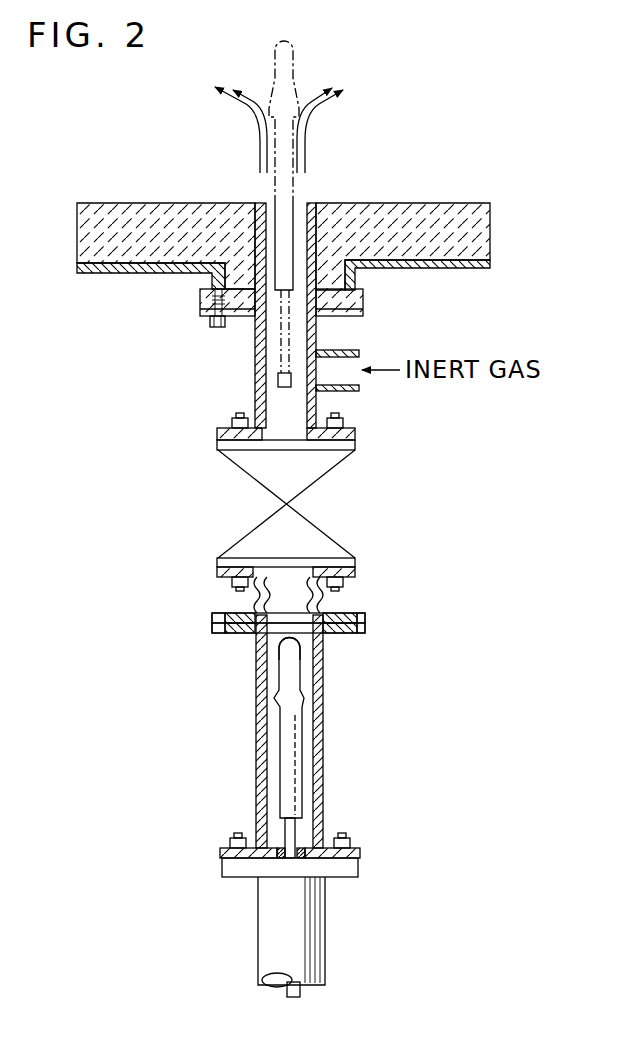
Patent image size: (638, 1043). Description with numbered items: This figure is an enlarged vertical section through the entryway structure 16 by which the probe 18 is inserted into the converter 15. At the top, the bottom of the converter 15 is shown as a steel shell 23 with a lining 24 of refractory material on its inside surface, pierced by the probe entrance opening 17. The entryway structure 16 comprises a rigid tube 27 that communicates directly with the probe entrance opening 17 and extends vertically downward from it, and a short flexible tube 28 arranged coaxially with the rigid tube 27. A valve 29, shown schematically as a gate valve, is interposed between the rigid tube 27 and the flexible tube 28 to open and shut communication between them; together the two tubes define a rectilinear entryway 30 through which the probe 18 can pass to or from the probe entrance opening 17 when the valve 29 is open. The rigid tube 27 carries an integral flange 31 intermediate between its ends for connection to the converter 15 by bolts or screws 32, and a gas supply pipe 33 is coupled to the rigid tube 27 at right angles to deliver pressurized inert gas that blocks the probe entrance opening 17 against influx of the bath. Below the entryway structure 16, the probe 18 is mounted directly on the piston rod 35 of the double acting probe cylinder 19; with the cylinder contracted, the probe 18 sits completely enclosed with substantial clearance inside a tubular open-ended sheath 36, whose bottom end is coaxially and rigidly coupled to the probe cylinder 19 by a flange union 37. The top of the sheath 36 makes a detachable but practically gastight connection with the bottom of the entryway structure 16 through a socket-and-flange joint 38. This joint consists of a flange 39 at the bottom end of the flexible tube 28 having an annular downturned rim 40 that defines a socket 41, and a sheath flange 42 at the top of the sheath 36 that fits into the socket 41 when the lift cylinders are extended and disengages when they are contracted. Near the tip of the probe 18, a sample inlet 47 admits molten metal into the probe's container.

The converter 15 is at (292, 218).
The entryway structure 16 is at (277, 600).
The probe entrance opening 17 is at (297, 210).
The probe 18 is at (292, 738).
The probe cylinder 19 is at (325, 948).
The steel shell 23 is at (425, 269).
The lining 24 is at (393, 210).
The rigid tube 27 is at (254, 364).
The flexible tube 28 is at (257, 598).
The valve 29 is at (316, 470).
The entryway 30 is at (275, 402).
The flange 31 is at (355, 318).
The bolts or screws 32 is at (217, 327).
The gas supply pipe 33 is at (355, 393).
The piston rod 35 is at (287, 828).
The sheath 36 is at (323, 778).
The flange union 37 is at (355, 869).
The socket-and-flange joint 38 is at (283, 627).
The flange 39 is at (357, 612).
The downturned rim 40 is at (366, 628).
The socket 41 is at (237, 629).
The sheath flange 42 is at (337, 629).
The sample inlet 47 is at (278, 650).